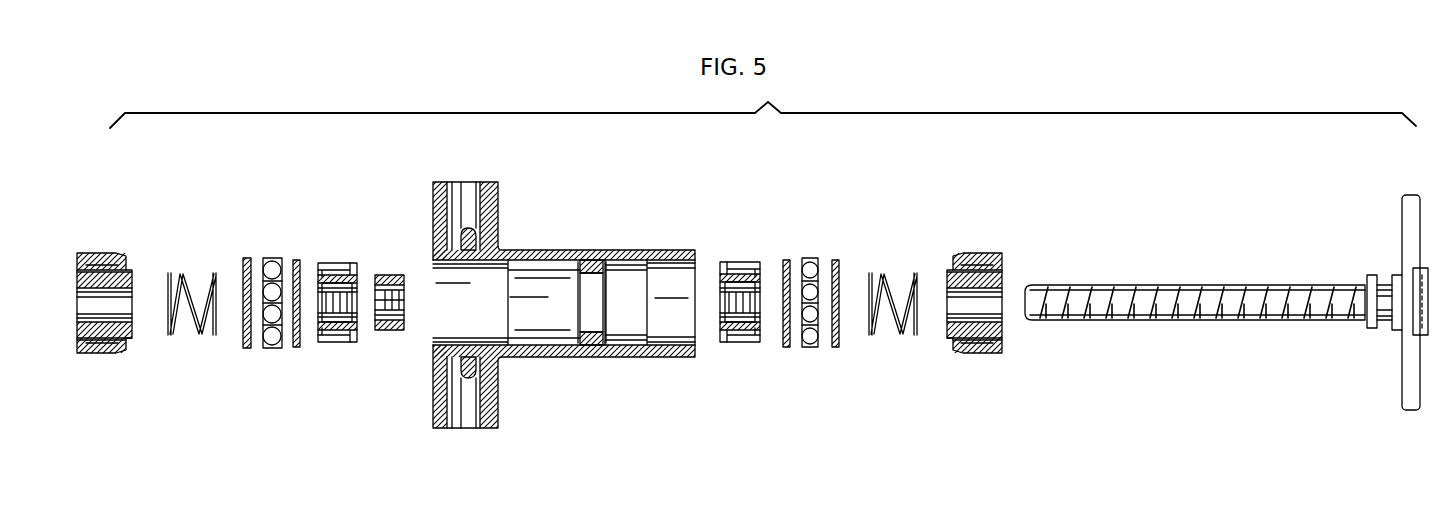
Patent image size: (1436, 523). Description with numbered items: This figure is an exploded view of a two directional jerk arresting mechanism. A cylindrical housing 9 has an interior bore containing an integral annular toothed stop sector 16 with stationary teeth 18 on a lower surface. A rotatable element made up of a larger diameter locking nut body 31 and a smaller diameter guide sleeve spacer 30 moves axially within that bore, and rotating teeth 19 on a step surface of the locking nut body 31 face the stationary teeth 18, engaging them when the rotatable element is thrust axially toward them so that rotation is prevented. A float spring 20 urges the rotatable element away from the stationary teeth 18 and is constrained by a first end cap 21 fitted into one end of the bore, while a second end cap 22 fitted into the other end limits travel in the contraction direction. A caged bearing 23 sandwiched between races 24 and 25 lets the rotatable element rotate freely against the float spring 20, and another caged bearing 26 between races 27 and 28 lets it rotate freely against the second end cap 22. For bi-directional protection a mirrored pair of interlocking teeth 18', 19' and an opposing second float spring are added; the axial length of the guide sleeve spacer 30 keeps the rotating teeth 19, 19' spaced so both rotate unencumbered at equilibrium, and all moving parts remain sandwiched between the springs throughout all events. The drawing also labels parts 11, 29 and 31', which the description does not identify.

The cylindrical housing 9 is at (564, 305).
The adjusting screw with handle 11 is at (1178, 287).
The annular toothed stop sector 16 is at (593, 283).
The stationary teeth 18 is at (564, 332).
The stationary teeth 18' is at (631, 332).
The rotating teeth 19 is at (347, 328).
The rotating teeth 19' is at (732, 328).
The float spring 20 is at (178, 278).
The first end cap 21 is at (985, 253).
The second end cap 22 is at (104, 270).
The caged bearing 23 is at (813, 258).
The race 24 is at (835, 260).
The race 25 is at (783, 262).
The caged bearing 26 is at (271, 258).
The race 27 is at (297, 262).
The race 28 is at (247, 260).
The opening 29 is at (590, 270).
The guide sleeve spacer 30 is at (390, 330).
The locking nut body 31 is at (350, 269).
The bore 31' is at (736, 266).